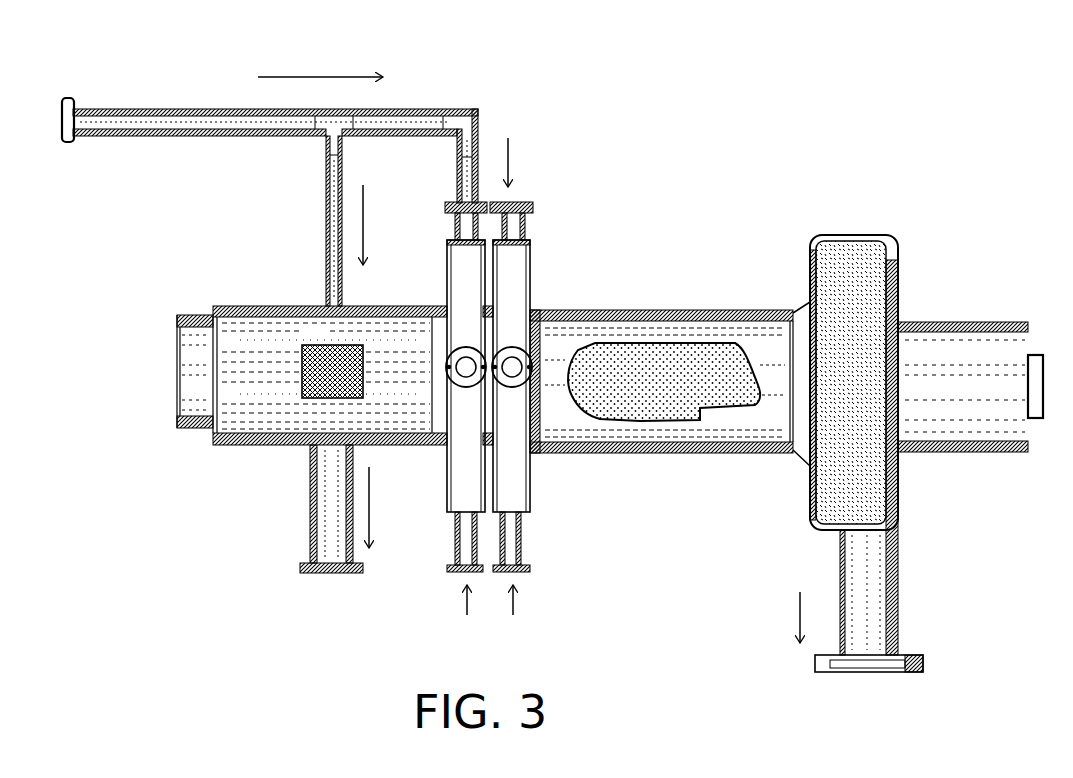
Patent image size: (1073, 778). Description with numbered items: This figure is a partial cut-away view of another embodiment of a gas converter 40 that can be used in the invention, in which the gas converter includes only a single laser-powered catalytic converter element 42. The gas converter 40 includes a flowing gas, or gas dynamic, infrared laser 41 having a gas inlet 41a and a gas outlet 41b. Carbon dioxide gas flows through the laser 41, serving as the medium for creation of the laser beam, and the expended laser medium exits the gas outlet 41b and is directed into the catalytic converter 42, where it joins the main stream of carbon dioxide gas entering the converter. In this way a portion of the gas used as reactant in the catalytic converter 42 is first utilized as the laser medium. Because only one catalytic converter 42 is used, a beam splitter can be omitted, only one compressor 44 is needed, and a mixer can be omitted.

The gas converter 40 is at (683, 50).
The flowing gas infrared laser 41 is at (190, 314).
The gas inlet 41a is at (326, 212).
The gas outlet 41b is at (310, 510).
The catalytic converter 42 is at (747, 313).
The compressor 44 is at (900, 287).